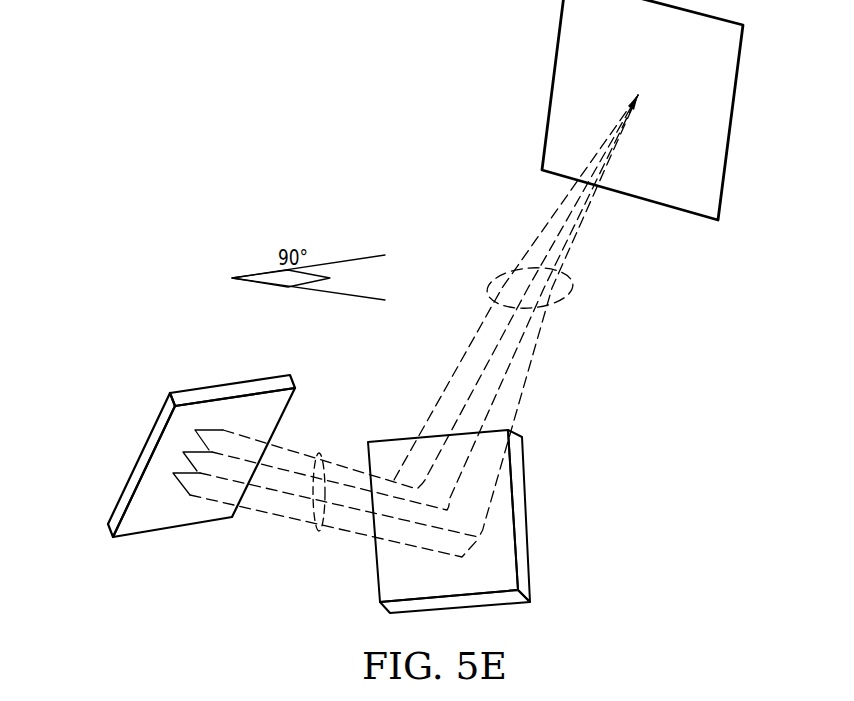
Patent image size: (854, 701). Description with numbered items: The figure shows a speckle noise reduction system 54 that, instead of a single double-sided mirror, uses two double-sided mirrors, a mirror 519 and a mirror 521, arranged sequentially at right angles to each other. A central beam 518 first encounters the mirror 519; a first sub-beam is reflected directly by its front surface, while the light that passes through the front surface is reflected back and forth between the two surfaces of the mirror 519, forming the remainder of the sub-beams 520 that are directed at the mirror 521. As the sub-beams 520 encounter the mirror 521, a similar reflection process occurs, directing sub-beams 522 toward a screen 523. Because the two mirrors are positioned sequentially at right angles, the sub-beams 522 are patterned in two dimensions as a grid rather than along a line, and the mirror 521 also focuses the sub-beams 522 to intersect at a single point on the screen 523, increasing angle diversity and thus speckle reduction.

The speckle noise reduction system 54 is at (307, 110).
The central beam 518 is at (174, 513).
The mirror 519 is at (140, 460).
The sub-beams 520 is at (320, 531).
The mirror 521 is at (527, 520).
The sub-beams 522 is at (567, 303).
The screen 523 is at (553, 73).